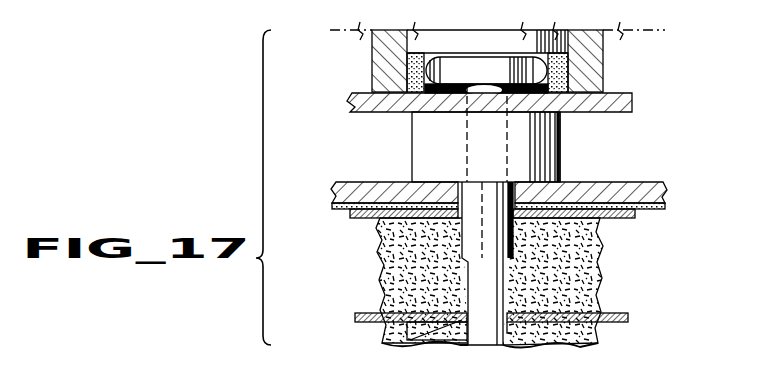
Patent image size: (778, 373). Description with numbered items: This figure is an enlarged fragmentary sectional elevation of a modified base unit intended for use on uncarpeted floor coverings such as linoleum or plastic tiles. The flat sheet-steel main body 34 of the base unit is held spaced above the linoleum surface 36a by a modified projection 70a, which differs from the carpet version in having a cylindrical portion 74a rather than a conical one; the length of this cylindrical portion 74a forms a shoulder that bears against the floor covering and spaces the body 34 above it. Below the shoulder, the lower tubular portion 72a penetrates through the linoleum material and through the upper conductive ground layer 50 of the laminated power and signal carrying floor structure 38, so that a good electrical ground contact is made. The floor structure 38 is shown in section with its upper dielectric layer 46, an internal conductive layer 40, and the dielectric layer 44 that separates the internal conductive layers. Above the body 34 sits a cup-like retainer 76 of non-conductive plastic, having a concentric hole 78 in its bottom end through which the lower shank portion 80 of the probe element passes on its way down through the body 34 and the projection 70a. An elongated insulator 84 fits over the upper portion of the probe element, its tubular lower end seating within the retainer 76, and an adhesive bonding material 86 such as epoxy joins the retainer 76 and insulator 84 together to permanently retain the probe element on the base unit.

The insulator 84 is at (566, 33).
The adhesive bonding material 86 is at (410, 66).
The hole 78 is at (500, 84).
The cup-like retainer 76 is at (592, 72).
The main body 34 is at (632, 99).
The cylindrical portion 74a is at (425, 148).
The lower tubular portion 72a is at (485, 200).
The modified projection 70a is at (570, 156).
The linoleum surface 36a is at (645, 190).
The laminated floor structure 38 is at (374, 262).
The upper conductive ground layer 50 is at (625, 218).
The upper dielectric layer 46 is at (583, 278).
The internal conductive layer 40 is at (620, 317).
The dielectric layer 44 is at (593, 344).
The lower shank portion 80 is at (420, 338).